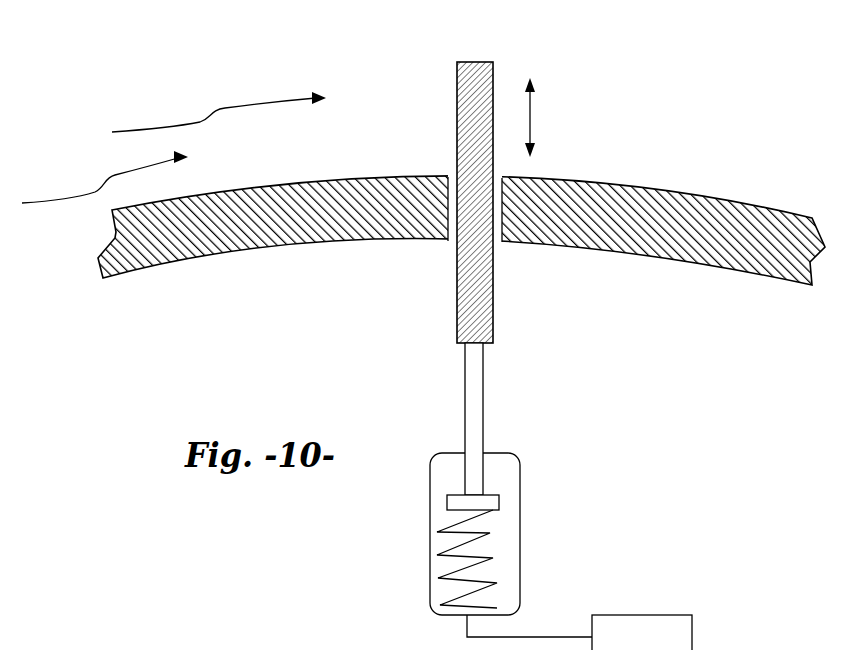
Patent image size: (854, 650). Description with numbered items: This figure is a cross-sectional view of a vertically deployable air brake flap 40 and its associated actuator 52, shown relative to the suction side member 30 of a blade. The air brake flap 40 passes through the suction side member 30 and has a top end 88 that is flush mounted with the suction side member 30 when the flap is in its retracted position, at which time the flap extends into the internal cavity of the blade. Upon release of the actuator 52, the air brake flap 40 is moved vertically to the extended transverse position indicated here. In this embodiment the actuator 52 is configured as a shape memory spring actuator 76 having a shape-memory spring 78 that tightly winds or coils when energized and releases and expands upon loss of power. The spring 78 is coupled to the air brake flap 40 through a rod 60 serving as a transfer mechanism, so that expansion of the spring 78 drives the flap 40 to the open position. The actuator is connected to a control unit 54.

The suction side member 30 is at (772, 200).
The air brake flap 40 is at (457, 117).
The top end 88 is at (432, 185).
The actuator 52 is at (530, 479).
The rod 60 is at (484, 402).
The shape memory spring actuator 76 is at (542, 530).
The shape-memory spring 78 is at (445, 557).
The controller 54 is at (700, 649).